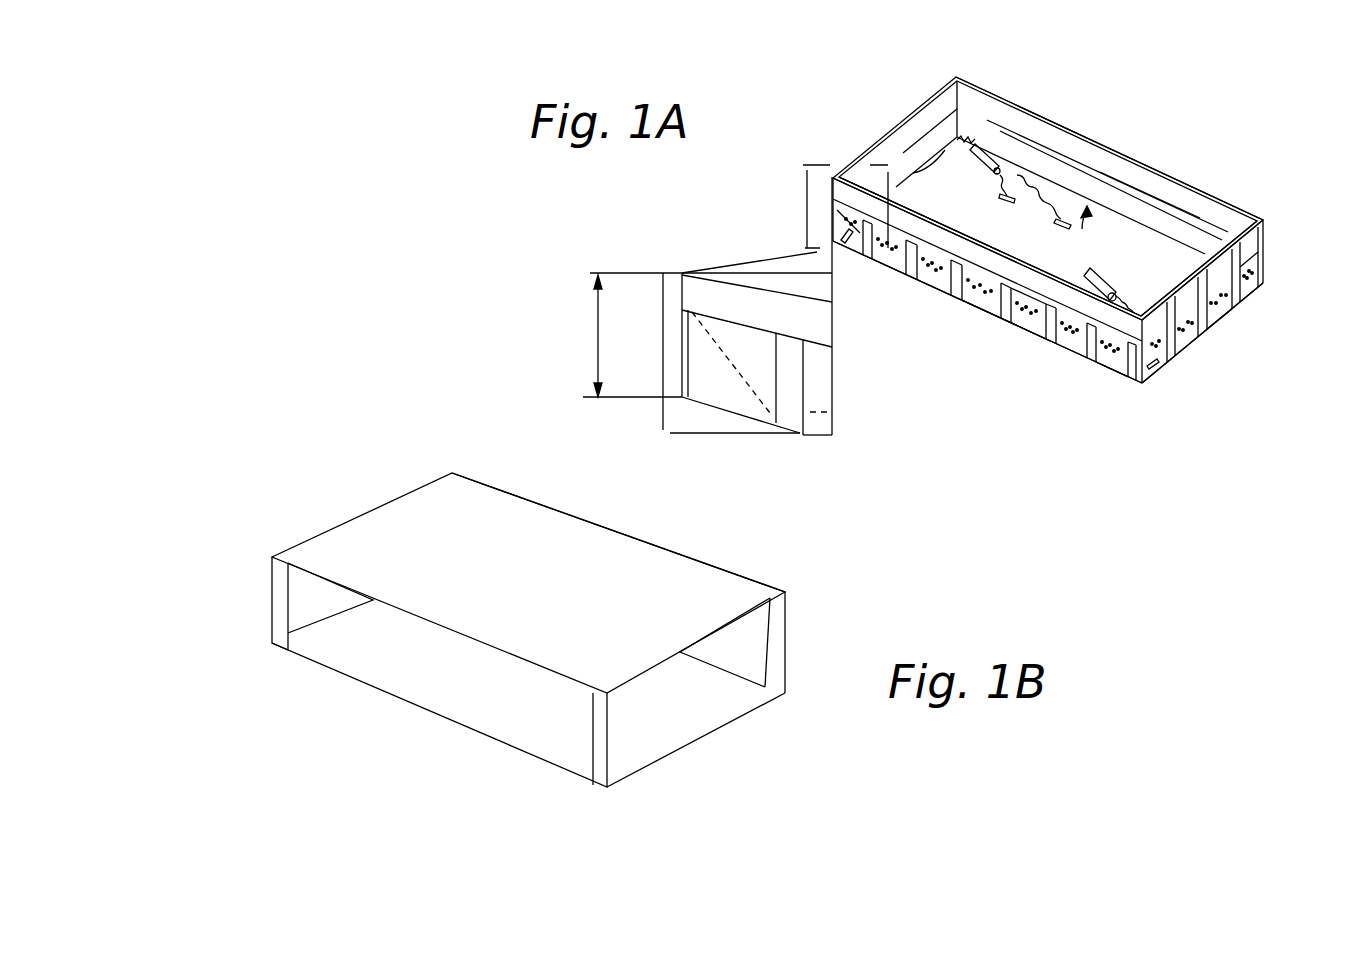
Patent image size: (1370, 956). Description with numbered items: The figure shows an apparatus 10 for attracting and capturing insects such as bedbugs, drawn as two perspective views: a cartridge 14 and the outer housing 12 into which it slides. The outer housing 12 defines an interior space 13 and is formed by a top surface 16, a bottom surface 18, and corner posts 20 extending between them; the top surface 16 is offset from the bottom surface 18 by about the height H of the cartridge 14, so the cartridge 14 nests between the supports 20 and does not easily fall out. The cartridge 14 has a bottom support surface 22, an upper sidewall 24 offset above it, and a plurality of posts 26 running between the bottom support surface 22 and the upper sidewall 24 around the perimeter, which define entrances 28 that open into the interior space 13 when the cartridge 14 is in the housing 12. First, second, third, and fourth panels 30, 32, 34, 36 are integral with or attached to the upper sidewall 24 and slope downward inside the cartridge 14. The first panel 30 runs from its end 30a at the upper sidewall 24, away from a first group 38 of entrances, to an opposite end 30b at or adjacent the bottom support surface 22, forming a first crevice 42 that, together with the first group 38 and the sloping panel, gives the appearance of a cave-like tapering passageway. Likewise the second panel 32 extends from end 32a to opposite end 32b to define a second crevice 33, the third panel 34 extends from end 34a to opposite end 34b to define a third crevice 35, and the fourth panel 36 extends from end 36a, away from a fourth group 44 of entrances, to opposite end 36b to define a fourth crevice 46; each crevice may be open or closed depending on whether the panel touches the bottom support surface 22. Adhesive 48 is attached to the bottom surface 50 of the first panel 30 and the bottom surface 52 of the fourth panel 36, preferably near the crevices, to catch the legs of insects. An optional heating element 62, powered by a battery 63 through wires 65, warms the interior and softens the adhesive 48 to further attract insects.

In FIG. 1A, the apparatus 10 is at (405, 175).
In FIG. 1B, the outer housing 12 is at (710, 582).
In FIG. 1B, the interior space 13 is at (710, 653).
In FIG. 1A, the cartridge 14 is at (1223, 318).
In FIG. 1B, the top surface 16 is at (388, 530).
In FIG. 1B, the bottom surface 18 is at (420, 667).
In FIG. 1B, the posts 20 is at (280, 605).
In FIG. 1A, the bottom support surface 22 is at (1115, 228).
In FIG. 1A, the upper sidewall 24 is at (840, 192).
In FIG. 1A, the posts 26 is at (1093, 360).
In FIG. 1A, the entrances 28 is at (988, 310).
In FIG. 1A, the first panel 30 is at (915, 297).
In FIG. 1A, the end of first panel 30a is at (938, 238).
In FIG. 1A, the opposite end of first panel 30b is at (988, 303).
In FIG. 1A, the second panel 32 is at (922, 122).
In FIG. 1A, the end of second panel 32a is at (952, 84).
In FIG. 1A, the opposite end of second panel 32b is at (942, 160).
In FIG. 1A, the second crevice 33 is at (770, 417).
In FIG. 1A, the third panel 34 is at (1096, 155).
In FIG. 1A, the end of third panel 34a is at (1220, 195).
In FIG. 1A, the opposite end of third panel 34b is at (1192, 246).
In FIG. 1A, the third crevice 35 is at (1085, 284).
In FIG. 1A, the fourth panel 36 is at (1210, 325).
In FIG. 1A, the end of fourth panel 36a is at (1184, 288).
In FIG. 1A, the opposite end of fourth panel 36b is at (1217, 322).
In FIG. 1A, the first group of entrances 38 is at (1111, 366).
In FIG. 1A, the first crevice 42 is at (1070, 350).
In FIG. 1A, the fourth group of entrances 44 is at (1258, 285).
In FIG. 1A, the fourth crevice 46 is at (1240, 303).
In FIG. 1A, the adhesive 48 is at (930, 268).
In FIG. 1A, the bottom surface of first panel 50 is at (1038, 300).
In FIG. 1A, the bottom surface of fourth panel 52 is at (1262, 262).
In FIG. 1A, the heating element 62 is at (1061, 218).
In FIG. 1A, the battery 63 is at (1006, 194).
In FIG. 1A, the wires 65 is at (913, 173).
In FIG. 1A, the height H is at (632, 335).